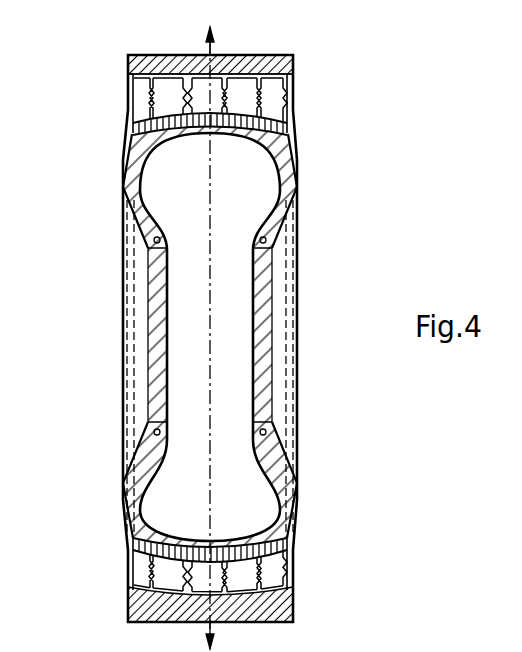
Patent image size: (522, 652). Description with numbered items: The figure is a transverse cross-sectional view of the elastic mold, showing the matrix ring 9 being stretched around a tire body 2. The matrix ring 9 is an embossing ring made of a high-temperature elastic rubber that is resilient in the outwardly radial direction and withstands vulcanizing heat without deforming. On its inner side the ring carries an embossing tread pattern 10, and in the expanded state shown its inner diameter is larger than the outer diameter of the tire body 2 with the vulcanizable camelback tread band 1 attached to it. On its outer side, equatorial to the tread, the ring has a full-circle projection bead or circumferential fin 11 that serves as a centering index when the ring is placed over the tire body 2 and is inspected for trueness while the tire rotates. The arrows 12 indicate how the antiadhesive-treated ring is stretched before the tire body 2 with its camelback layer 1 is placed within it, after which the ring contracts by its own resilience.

The camelback tread band 1 is at (293, 130).
The tire body 2 is at (287, 177).
The matrix ring 9 is at (294, 78).
The embossing tread pattern 10 is at (198, 100).
The circumferential fin 11 is at (213, 53).
The arrows 12 is at (206, 636).